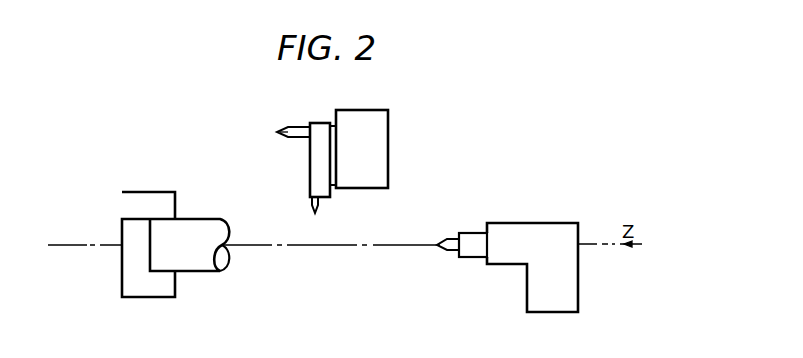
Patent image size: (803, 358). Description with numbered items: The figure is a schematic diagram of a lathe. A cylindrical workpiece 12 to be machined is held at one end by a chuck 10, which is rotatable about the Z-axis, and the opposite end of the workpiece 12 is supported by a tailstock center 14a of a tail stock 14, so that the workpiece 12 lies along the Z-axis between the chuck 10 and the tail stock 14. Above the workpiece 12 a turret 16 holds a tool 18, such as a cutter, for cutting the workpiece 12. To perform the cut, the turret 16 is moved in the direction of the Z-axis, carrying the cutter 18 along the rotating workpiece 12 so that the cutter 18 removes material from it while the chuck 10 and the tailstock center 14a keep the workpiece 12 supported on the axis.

The chuck 10 is at (153, 197).
The cylindrical workpiece 12 is at (203, 224).
The tail stock 14 is at (548, 232).
The tailstock center 14a is at (440, 243).
The turret 16 is at (320, 127).
The tool 18 is at (316, 208).